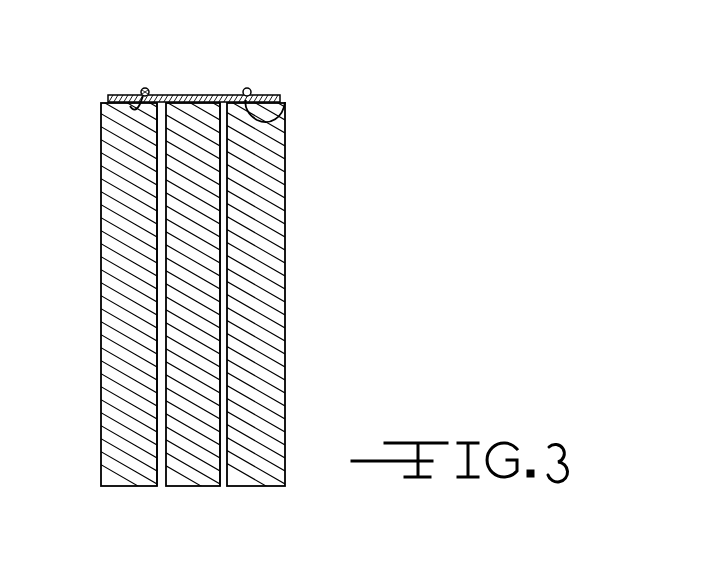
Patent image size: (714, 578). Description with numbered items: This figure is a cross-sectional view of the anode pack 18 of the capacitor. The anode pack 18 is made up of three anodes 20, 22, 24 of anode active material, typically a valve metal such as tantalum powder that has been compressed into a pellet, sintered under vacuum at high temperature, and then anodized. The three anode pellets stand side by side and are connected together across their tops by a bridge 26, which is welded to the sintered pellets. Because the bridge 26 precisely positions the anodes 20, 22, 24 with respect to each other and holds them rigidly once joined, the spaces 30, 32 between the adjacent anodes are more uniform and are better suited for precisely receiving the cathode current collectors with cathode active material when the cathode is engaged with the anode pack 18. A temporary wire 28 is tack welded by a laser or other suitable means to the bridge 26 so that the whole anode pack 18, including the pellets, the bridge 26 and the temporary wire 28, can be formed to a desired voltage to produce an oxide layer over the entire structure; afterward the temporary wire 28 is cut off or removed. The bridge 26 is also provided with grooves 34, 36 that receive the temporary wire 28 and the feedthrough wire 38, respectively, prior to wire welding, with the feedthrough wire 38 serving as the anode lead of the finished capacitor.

The anode pack 18 is at (204, 283).
The anode 20 is at (112, 468).
The anode 22 is at (193, 472).
The anode 24 is at (255, 470).
The bridge 26 is at (188, 93).
The temporary wire 28 is at (249, 86).
The space 30 is at (160, 488).
The space 32 is at (222, 488).
The groove 34 is at (285, 102).
The groove 36 is at (130, 106).
The feedthrough wire 38 is at (146, 88).